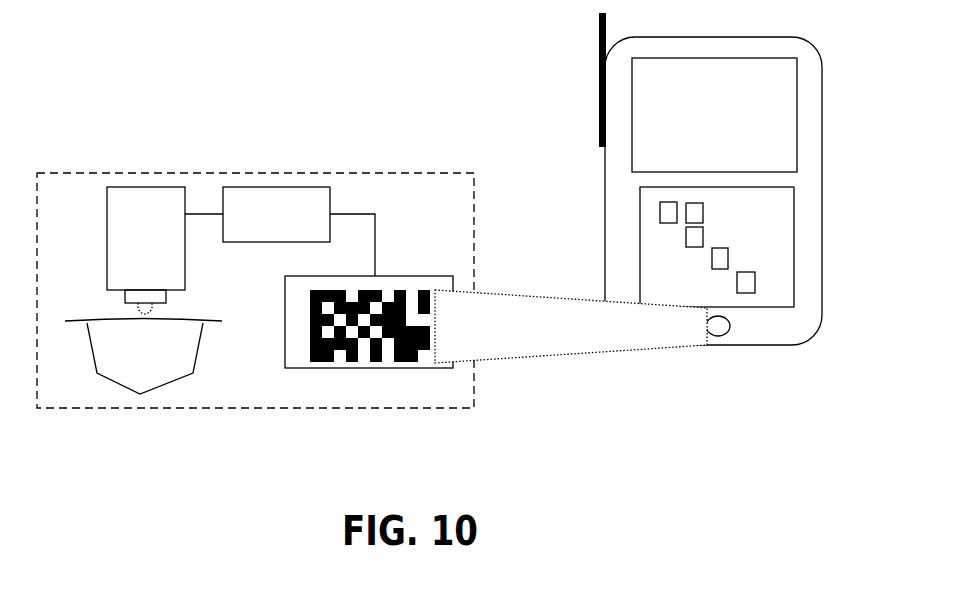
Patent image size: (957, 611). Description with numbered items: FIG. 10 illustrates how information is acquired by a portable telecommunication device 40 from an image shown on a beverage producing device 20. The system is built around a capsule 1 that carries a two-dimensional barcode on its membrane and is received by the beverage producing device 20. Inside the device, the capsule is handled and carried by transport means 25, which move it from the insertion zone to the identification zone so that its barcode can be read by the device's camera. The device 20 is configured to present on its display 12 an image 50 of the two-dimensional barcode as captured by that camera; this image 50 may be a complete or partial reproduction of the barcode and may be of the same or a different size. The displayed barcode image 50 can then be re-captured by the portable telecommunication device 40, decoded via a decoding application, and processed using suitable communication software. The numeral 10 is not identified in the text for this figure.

The capsule 1 is at (95, 312).
The control unit 10 is at (287, 187).
The display 12 is at (399, 265).
The beverage producing device 20 is at (215, 172).
The transport means 25 is at (402, 363).
The portable telecommunication device 40 is at (603, 160).
The image of the 2-D barcode 50 is at (137, 187).